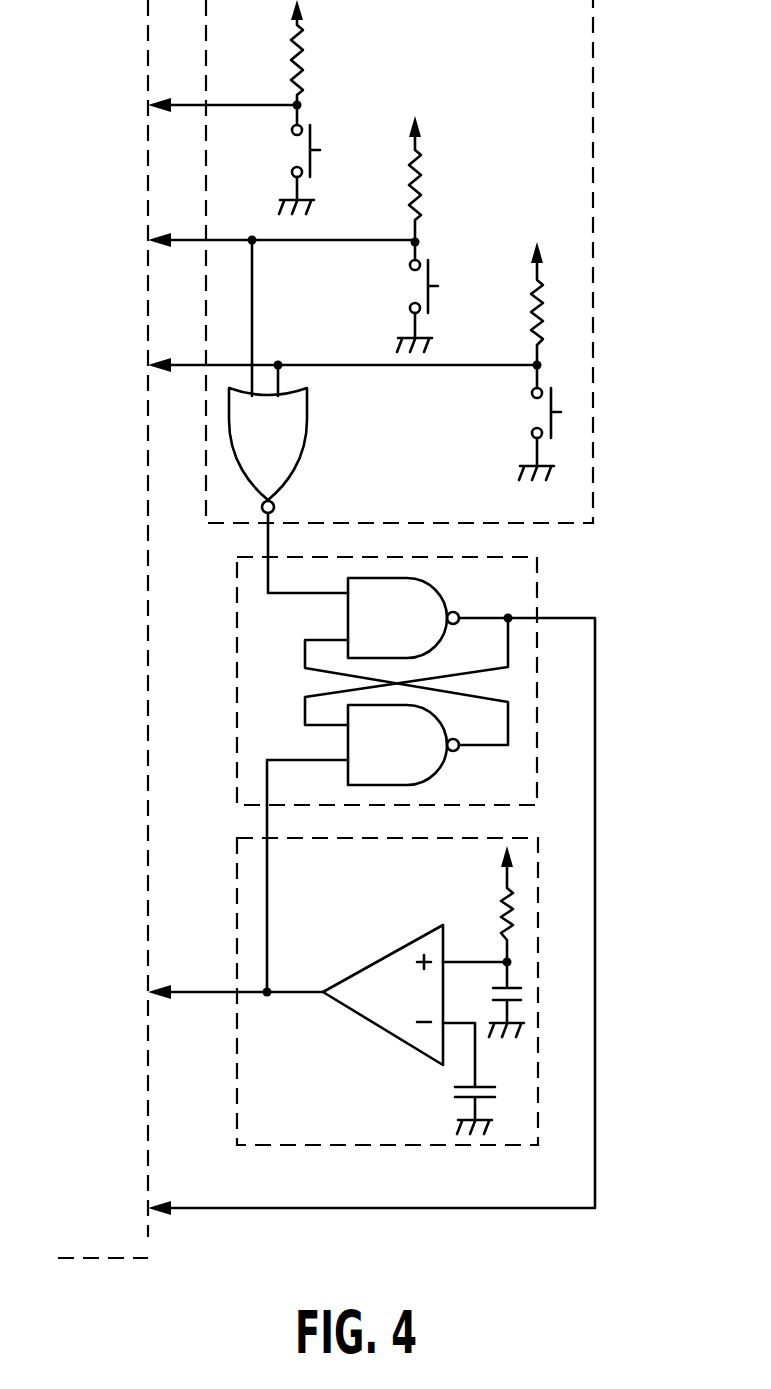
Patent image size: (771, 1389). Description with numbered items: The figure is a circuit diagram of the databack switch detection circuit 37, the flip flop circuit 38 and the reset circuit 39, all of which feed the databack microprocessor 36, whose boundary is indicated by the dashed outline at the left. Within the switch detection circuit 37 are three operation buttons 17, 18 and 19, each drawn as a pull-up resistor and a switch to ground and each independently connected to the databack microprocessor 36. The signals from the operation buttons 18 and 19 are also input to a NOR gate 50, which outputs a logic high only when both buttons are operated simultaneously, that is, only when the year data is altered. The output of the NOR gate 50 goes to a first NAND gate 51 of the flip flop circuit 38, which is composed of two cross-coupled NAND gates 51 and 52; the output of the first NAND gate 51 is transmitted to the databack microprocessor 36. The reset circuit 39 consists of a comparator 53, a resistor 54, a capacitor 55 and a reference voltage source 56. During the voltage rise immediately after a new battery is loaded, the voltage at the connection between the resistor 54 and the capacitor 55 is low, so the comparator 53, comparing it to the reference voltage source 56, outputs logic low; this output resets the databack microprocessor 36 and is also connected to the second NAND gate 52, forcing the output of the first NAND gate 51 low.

The operation button 17 is at (311, 128).
The operation button 18 is at (430, 263).
The operation button 19 is at (530, 413).
The databack microprocessor 36 is at (148, 1258).
The databack switch detection circuit 37 is at (593, 485).
The flip flop circuit 38 is at (537, 583).
The reset circuit 39 is at (285, 1147).
The NOR gate 50 is at (307, 436).
The first NAND gate 51 is at (348, 630).
The second NAND gate 52 is at (348, 747).
The comparator 53 is at (366, 1019).
The resistor 54 is at (498, 895).
The capacitor 55 is at (524, 995).
The reference voltage source 56 is at (454, 1088).